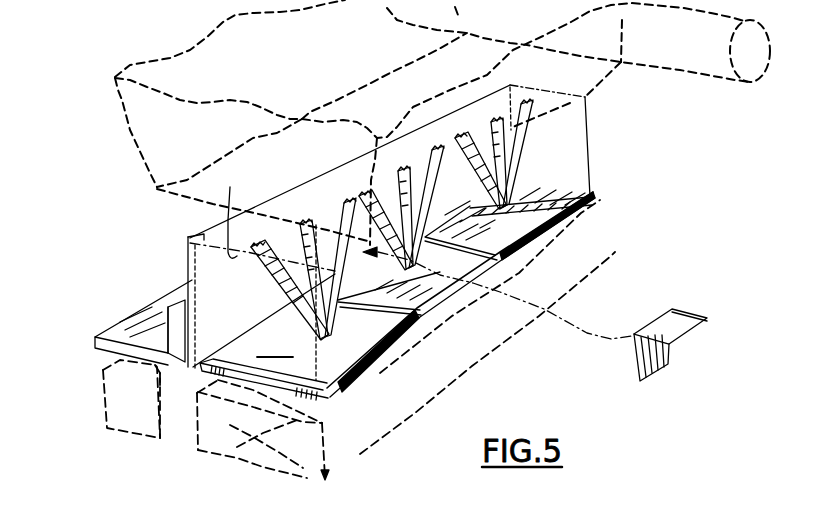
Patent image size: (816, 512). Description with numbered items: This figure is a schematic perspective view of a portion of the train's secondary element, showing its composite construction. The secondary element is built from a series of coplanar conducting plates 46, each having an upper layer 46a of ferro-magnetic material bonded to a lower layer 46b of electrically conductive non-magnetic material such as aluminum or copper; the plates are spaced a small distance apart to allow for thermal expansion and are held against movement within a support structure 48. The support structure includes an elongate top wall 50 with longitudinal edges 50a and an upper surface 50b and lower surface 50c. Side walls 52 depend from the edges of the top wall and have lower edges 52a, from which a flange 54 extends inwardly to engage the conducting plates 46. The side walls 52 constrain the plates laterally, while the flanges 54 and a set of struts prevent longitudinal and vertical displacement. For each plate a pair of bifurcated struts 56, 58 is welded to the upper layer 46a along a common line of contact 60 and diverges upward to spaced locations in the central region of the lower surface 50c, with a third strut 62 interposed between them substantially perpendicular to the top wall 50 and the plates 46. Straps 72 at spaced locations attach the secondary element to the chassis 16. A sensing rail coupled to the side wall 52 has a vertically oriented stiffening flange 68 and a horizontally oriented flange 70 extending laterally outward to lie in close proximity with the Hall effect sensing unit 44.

The chassis 16 is at (125, 123).
The Hall effect sensing unit 44 is at (133, 405).
The conducting plates 46 is at (410, 325).
The upper layer 46a is at (277, 346).
The lower layer 46b is at (263, 376).
The support structure 48 is at (552, 159).
The elongate top wall 50 is at (282, 196).
The longitudinal edges 50a is at (207, 233).
The upper surface 50b is at (260, 248).
The lower surface 50c is at (241, 211).
The side walls 52 is at (263, 430).
The lower edges 52a is at (325, 396).
The flange 54 is at (295, 398).
The bifurcated strut 56 is at (276, 285).
The bifurcated strut 58 is at (320, 285).
The common line of contact 60 is at (320, 343).
The third strut 62 is at (322, 224).
The stiffening flange 68 is at (157, 319).
The horizontally oriented flange 70 is at (110, 322).
The straps 72 is at (677, 349).